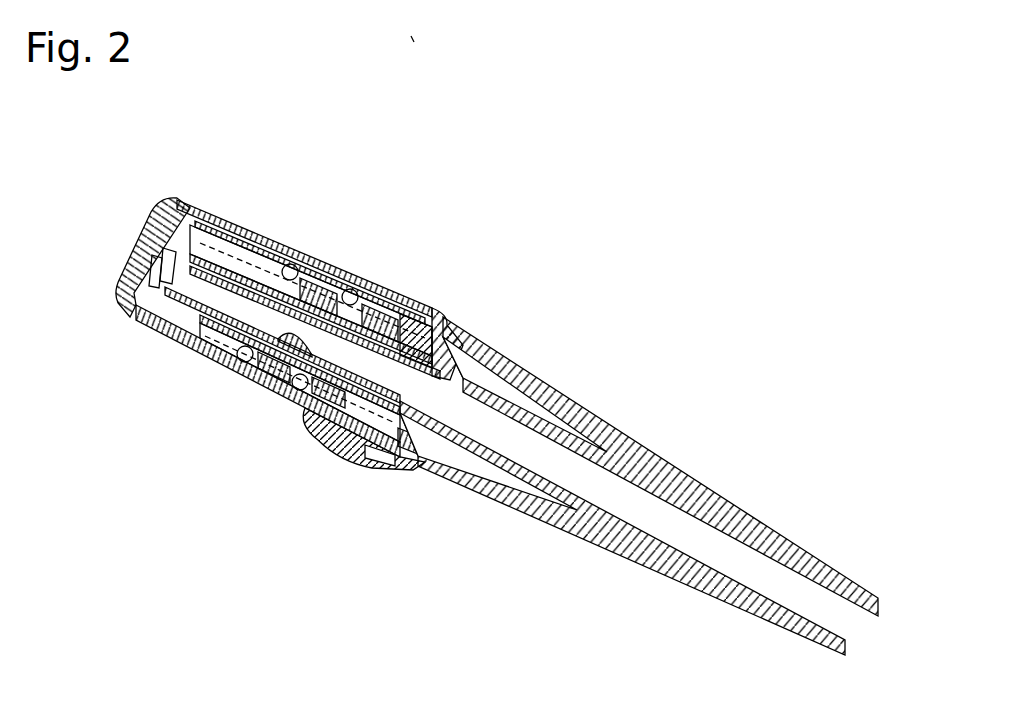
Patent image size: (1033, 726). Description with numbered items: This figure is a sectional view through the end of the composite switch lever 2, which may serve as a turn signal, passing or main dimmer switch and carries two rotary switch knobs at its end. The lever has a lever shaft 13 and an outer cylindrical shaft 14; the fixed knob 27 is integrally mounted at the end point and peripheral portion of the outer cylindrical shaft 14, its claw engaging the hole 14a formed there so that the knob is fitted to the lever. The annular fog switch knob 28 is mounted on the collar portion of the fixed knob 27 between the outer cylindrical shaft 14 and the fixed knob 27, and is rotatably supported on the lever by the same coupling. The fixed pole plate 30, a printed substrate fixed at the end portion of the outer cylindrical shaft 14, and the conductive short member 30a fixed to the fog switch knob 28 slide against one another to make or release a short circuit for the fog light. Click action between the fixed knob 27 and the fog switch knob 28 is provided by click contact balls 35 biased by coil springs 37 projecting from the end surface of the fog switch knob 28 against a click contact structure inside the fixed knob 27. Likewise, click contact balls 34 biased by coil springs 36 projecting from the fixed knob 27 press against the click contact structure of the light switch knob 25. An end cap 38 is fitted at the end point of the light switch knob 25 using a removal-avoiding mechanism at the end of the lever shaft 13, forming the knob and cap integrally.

The composite switch lever 2 is at (639, 490).
The lever shaft 13 is at (725, 567).
The outer cylindrical shaft 14 is at (760, 540).
The hole 14a is at (293, 402).
The light switch knob 25 is at (197, 365).
The fixed knob 27 is at (300, 415).
The fog switch knob 28 is at (337, 452).
The fixed pole plate 30 is at (415, 453).
The short member 30a is at (377, 463).
The click contact balls 34 is at (290, 262).
The click contact balls 35 is at (356, 287).
The coil springs 36 is at (320, 272).
The coil springs 37 is at (398, 290).
The end cap 38 is at (150, 236).